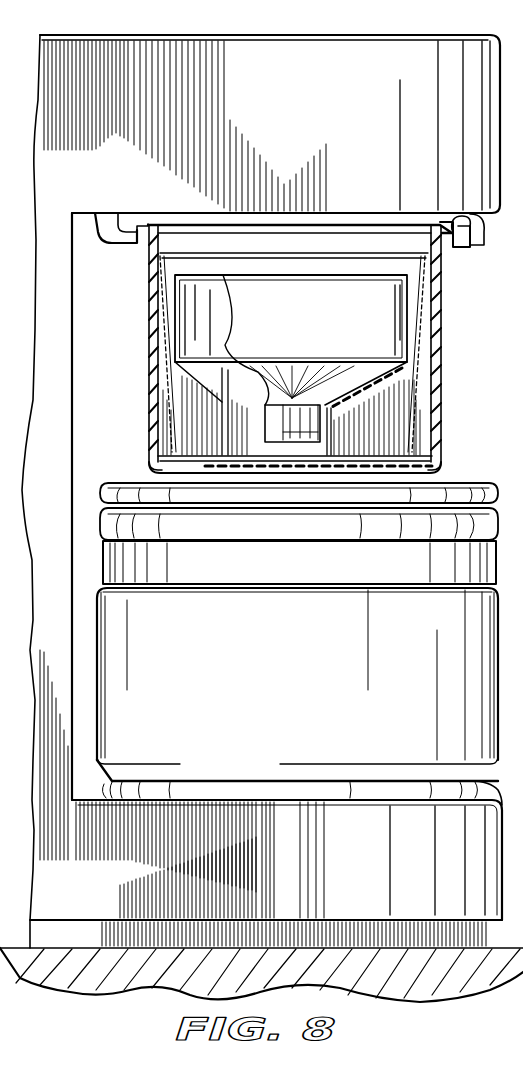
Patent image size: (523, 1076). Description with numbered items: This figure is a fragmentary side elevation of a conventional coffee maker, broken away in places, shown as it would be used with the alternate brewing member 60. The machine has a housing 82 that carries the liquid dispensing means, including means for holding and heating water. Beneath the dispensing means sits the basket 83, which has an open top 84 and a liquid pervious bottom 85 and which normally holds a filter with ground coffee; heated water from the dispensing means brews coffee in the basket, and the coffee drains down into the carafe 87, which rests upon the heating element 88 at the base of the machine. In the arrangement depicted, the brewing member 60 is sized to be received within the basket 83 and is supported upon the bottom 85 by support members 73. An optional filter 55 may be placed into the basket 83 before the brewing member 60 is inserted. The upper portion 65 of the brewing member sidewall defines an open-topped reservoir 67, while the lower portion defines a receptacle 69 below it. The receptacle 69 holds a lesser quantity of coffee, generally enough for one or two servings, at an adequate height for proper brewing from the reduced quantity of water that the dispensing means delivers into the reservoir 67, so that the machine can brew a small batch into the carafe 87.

The housing 82 is at (282, 26).
The upper portion 65 is at (36, 491).
The support members 73 is at (372, 443).
The filter 55 is at (158, 264).
The brewing member 60 is at (158, 346).
The reservoir 67 is at (330, 326).
The receptacle 69 is at (292, 405).
The basket 83 is at (142, 412).
The open top 84 is at (470, 247).
The liquid pervious bottom 85 is at (276, 473).
The carafe 87 is at (100, 618).
The heating element 88 is at (258, 796).